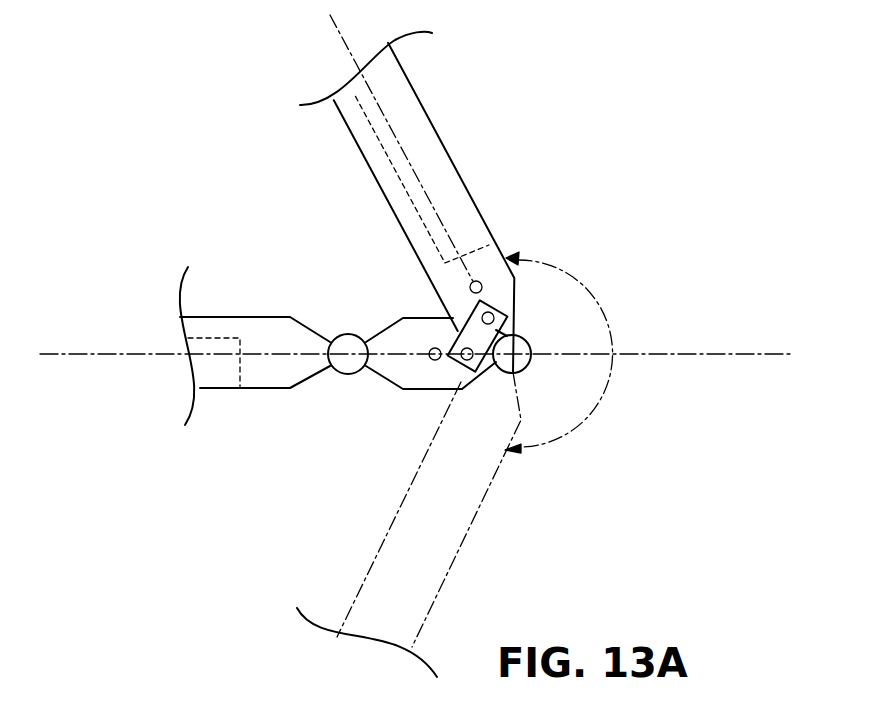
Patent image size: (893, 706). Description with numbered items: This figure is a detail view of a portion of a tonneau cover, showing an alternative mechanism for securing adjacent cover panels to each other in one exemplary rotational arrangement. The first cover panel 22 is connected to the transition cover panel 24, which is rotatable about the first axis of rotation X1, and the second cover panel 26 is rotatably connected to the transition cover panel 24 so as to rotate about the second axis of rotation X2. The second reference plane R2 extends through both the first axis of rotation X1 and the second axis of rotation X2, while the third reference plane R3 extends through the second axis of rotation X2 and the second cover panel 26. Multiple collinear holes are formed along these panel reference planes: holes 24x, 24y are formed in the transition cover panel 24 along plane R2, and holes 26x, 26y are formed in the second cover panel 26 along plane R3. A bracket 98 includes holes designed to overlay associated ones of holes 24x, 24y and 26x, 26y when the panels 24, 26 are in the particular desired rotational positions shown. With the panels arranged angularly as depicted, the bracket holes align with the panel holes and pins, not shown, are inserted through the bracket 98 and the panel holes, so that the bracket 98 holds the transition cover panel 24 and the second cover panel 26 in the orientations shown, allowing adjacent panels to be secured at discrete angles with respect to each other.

The first cover panel 22 is at (258, 317).
The transition cover panel 24 is at (402, 391).
The second cover panel 26 is at (440, 140).
The bracket 98 is at (517, 334).
The first axis of rotation X1 is at (348, 354).
The second axis of rotation X2 is at (588, 411).
The second reference plane R2 is at (403, 352).
The third reference plane R3 is at (386, 115).
The hole 26x is at (513, 327).
The hole 26y is at (512, 258).
The hole 24x is at (462, 388).
The hole 24y is at (436, 361).